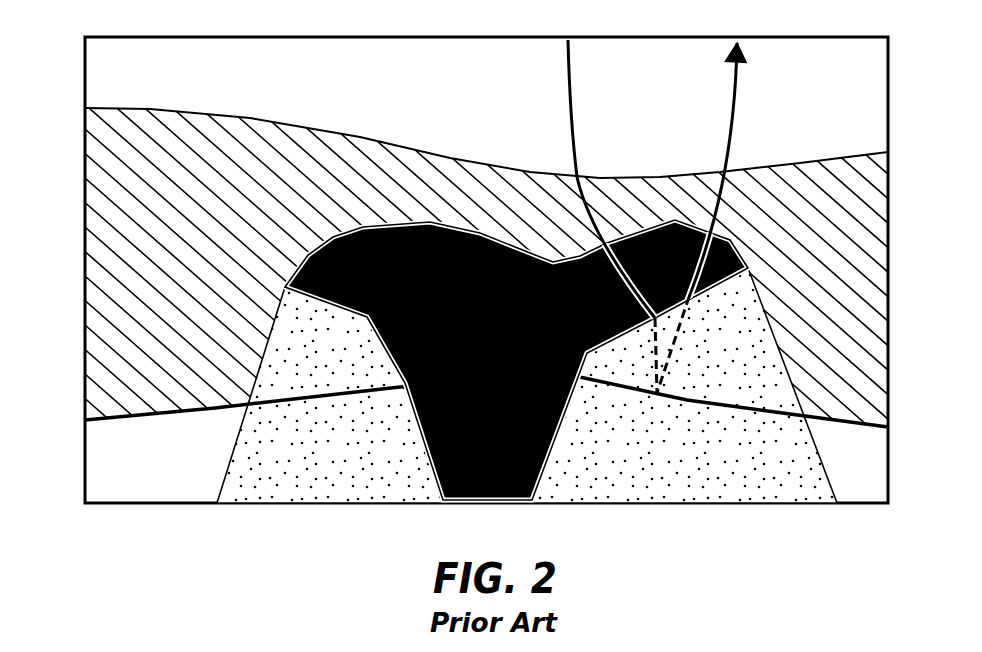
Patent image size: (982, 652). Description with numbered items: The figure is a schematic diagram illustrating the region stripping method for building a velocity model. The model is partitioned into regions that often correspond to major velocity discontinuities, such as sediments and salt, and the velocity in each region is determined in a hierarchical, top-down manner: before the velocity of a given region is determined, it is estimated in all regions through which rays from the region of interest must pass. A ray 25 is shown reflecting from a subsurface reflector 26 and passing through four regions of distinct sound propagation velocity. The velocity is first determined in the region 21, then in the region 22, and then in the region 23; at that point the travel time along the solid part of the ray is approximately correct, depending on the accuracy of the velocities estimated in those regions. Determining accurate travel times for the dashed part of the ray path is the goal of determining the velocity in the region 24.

The region 21 is at (106, 72).
The region 22 is at (103, 180).
The region 23 is at (448, 290).
The region 24 is at (346, 446).
The ray 25 is at (573, 95).
The subsurface reflector 26 is at (711, 402).